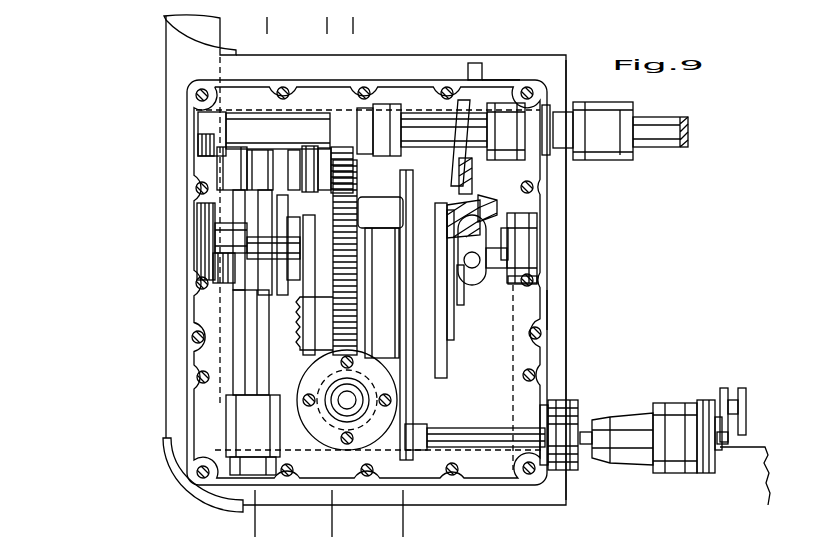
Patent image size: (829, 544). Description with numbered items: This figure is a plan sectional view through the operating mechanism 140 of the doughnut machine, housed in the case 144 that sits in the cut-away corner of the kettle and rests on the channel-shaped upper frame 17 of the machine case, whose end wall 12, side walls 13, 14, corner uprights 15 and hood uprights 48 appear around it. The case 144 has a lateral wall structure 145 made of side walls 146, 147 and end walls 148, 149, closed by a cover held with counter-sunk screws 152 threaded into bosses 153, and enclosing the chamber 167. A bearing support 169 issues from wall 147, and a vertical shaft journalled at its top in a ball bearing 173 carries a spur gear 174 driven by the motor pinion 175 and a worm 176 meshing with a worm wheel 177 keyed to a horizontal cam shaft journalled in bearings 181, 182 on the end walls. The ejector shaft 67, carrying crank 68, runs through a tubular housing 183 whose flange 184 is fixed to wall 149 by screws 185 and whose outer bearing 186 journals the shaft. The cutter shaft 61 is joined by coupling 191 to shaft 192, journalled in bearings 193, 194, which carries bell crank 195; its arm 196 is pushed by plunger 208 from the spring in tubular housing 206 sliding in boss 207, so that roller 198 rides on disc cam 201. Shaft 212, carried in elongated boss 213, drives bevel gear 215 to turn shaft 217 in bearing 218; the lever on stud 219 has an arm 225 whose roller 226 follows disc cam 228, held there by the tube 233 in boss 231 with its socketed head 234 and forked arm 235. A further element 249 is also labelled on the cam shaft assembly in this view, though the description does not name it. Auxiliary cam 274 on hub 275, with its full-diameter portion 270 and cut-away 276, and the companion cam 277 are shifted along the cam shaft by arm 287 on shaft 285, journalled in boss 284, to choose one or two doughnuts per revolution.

The end wall 12 is at (258, 29).
The side wall 13 is at (318, 29).
The side wall 14 is at (362, 29).
The upright 15 is at (167, 477).
The frame 17 is at (177, 79).
The upright 48 is at (167, 29).
The shaft 61 is at (668, 130).
The shaft 67 is at (475, 428).
The crank 68 is at (730, 388).
The operating mechanism 140 is at (537, 281).
The case 144 is at (187, 280).
The lateral wall structure 145 is at (567, 313).
The side wall 146 is at (496, 78).
The side wall 147 is at (518, 486).
The end wall 148 is at (193, 297).
The end wall 149 is at (541, 313).
The counter-sunk screw 152 is at (196, 98).
The boss 153 is at (196, 372).
The chamber 167 is at (212, 438).
The bearing support 169 is at (382, 358).
The ball bearing 173 is at (340, 405).
The spur gear 174 is at (290, 423).
The pinion 175 is at (312, 314).
The worm 176 is at (310, 418).
The worm wheel 177 is at (340, 147).
The bearing 181 is at (240, 238).
The bearing 182 is at (520, 250).
The tubular housing 183 is at (633, 420).
The flange 184 is at (549, 403).
The screw 185 is at (560, 427).
The bearing 186 is at (670, 470).
The coupling 191 is at (618, 152).
The shaft 192 is at (415, 113).
The bearing 193 is at (205, 122).
The bearing 194 is at (487, 160).
The bell crank 195 is at (393, 110).
The arm 196 is at (380, 130).
The roller 198 is at (426, 120).
The disc cam 201 is at (413, 360).
The tubular housing 206 is at (362, 450).
The boss 207 is at (420, 428).
The plunger 208 is at (464, 285).
The shaft 212 is at (482, 65).
The elongated boss 213 is at (575, 118).
The bevel gear 215 is at (622, 148).
The shaft 217 is at (240, 237).
The bearing 218 is at (560, 150).
The stud 219 is at (278, 135).
The arm 225 is at (235, 212).
The roller 226 is at (214, 258).
The disc cam 228 is at (292, 150).
The boss 231 is at (240, 422).
The tube 233 is at (247, 382).
The socketed head 234 is at (205, 226).
The forked arm 235 is at (212, 200).
The gear 249 is at (323, 148).
The portion 270 is at (443, 374).
The auxiliary cam 274 is at (454, 337).
The hub 275 is at (461, 302).
The cut-away 276 is at (455, 100).
The cam 277 is at (300, 303).
The boss 284 is at (537, 222).
The shaft 285 is at (526, 236).
The arm 287 is at (520, 275).